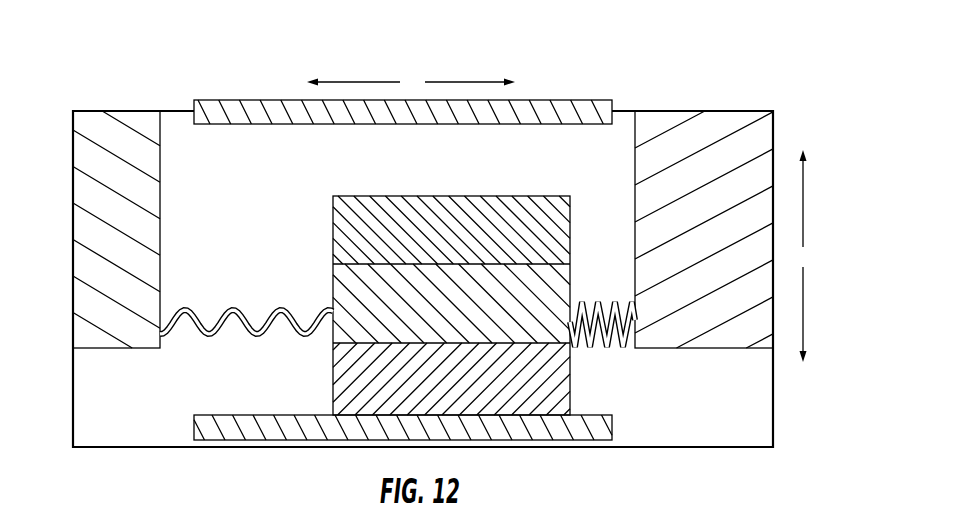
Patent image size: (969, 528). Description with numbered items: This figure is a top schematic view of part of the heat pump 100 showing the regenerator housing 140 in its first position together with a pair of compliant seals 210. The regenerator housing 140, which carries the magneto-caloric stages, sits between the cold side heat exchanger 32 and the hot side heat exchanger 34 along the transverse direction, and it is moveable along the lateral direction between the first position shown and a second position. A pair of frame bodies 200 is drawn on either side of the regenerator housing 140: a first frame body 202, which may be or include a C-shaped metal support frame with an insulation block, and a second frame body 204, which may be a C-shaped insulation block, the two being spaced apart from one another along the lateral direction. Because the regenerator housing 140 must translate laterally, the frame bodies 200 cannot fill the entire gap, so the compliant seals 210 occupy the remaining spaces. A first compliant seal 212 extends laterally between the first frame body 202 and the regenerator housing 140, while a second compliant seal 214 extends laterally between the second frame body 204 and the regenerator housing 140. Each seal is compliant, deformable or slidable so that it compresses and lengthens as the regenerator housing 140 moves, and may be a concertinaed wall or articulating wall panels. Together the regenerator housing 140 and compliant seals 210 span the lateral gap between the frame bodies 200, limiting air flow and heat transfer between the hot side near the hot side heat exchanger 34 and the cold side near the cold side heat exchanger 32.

The heat pump 100 is at (424, 226).
The cold side heat exchanger 32 is at (556, 110).
The hot side heat exchanger 34 is at (612, 428).
The regenerator housing 140 is at (357, 283).
The frame bodies 200 is at (777, 135).
The first frame body 202 is at (688, 123).
The second frame body 204 is at (82, 182).
The compliant seals 210 is at (397, 316).
The first compliant seal 212 is at (599, 302).
The second compliant seal 214 is at (298, 318).